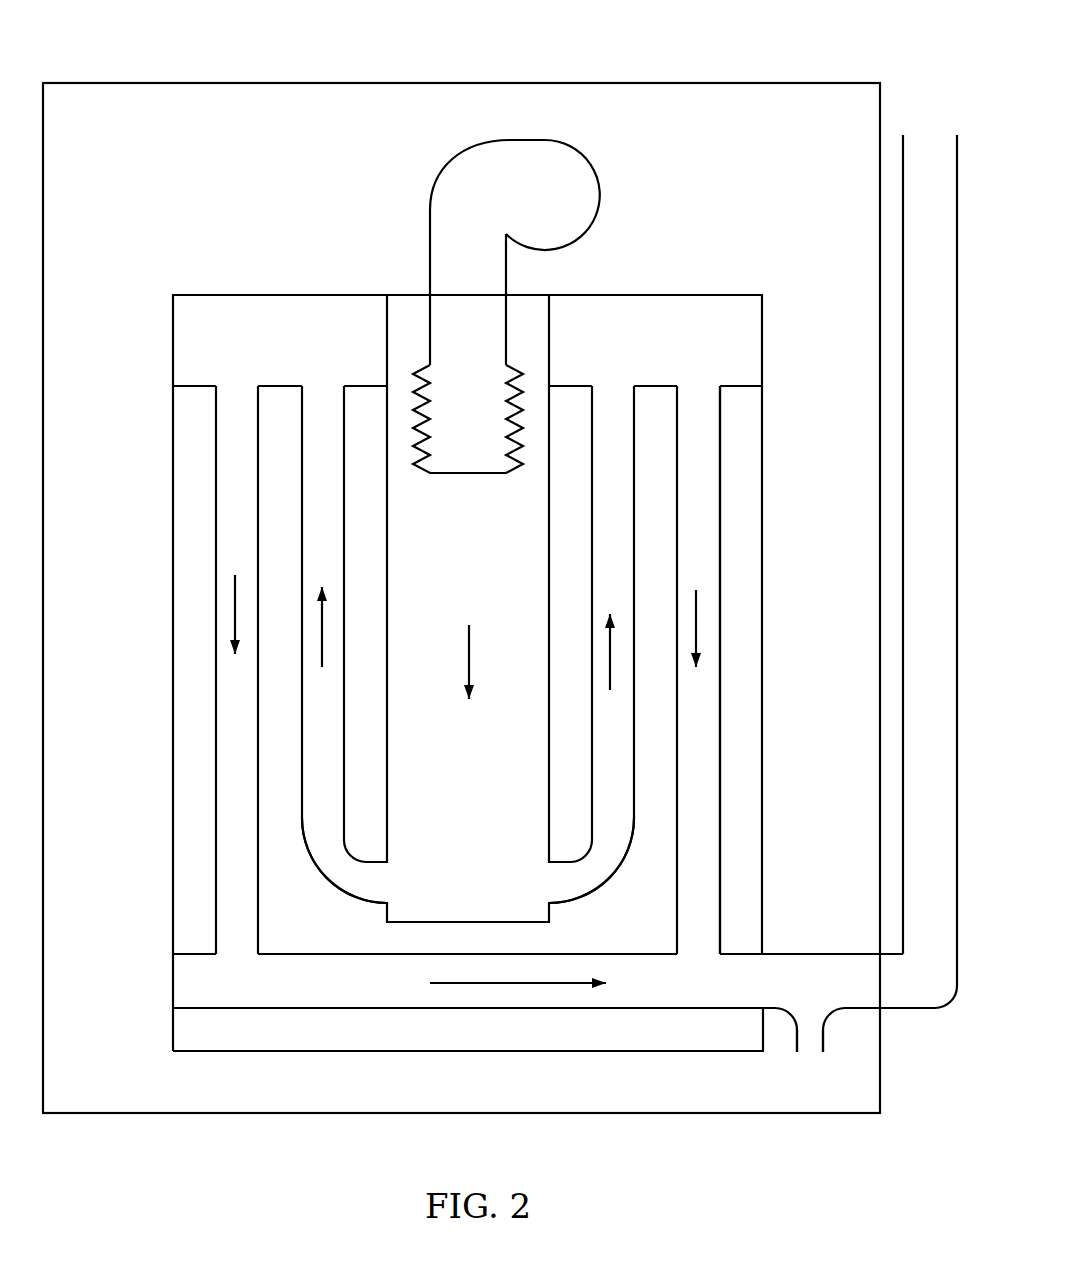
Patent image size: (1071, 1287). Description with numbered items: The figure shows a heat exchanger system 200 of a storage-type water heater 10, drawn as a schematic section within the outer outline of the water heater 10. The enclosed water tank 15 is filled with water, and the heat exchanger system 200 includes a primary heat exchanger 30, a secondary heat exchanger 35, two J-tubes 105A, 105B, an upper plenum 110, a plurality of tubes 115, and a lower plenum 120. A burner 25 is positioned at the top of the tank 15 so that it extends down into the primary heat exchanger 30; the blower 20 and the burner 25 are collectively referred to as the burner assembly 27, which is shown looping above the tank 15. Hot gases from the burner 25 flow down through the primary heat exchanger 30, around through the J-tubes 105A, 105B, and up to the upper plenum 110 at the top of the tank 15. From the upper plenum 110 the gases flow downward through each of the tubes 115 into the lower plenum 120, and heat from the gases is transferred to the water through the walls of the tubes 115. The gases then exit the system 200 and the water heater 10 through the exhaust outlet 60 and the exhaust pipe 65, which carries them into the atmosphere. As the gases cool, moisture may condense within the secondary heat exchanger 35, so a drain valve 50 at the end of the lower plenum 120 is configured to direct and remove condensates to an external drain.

The water heater 10 is at (183, 82).
The water tank 15 is at (192, 294).
The blower 20 is at (600, 195).
The burner 25 is at (430, 343).
The burner assembly 27 is at (583, 122).
The primary heat exchanger 30 is at (549, 413).
The secondary heat exchanger 35 is at (720, 459).
The drain valve 50 is at (811, 1054).
The exhaust outlet 60 is at (879, 1011).
The exhaust pipe 65 is at (930, 571).
The J-tube 105A is at (346, 899).
The J-tube 105B is at (591, 899).
The upper plenum 110 is at (747, 338).
The tubes 115 is at (216, 680).
The lower plenum 120 is at (173, 982).
The heat exchanger system 200 is at (714, 171).